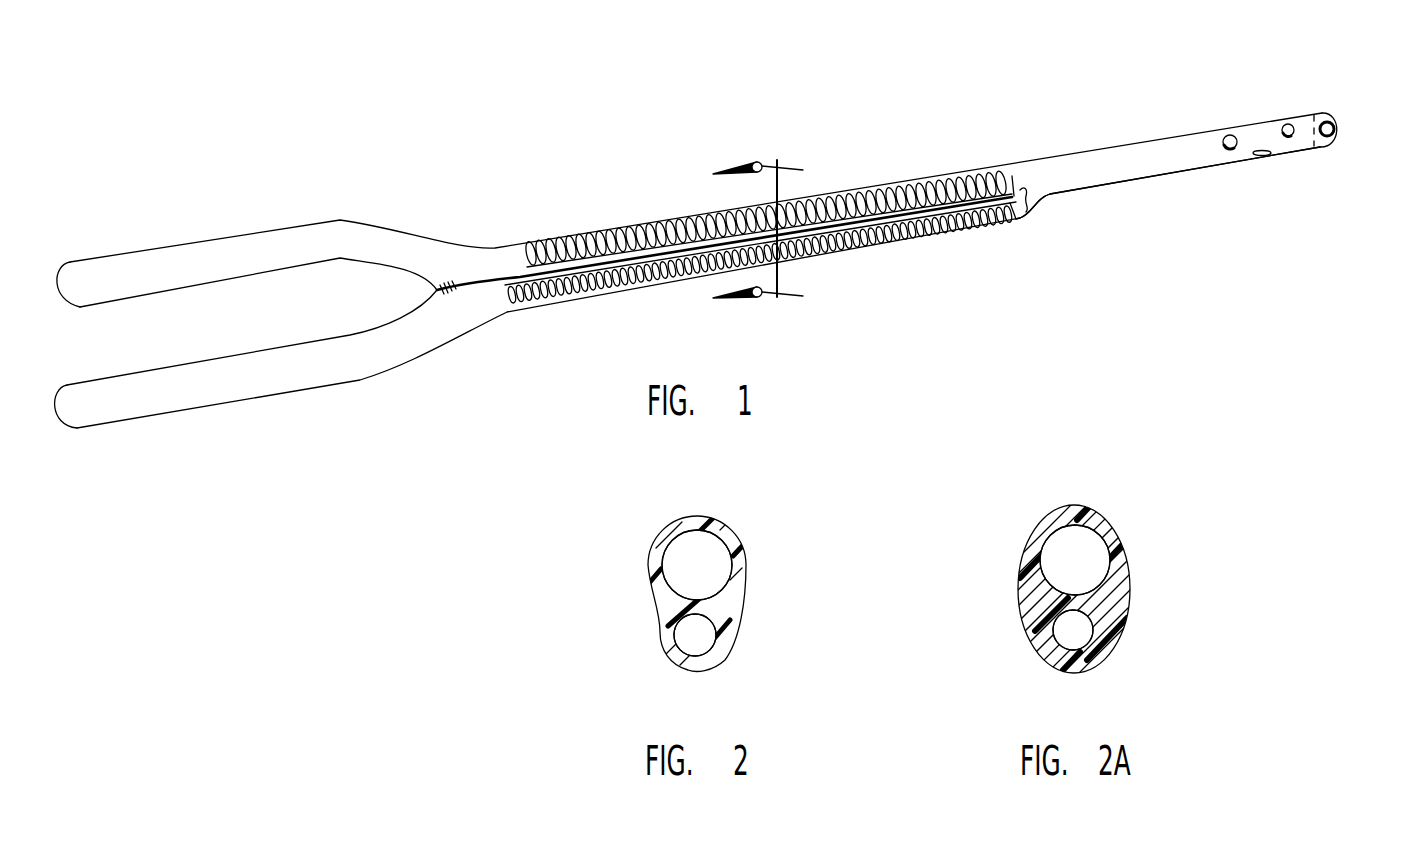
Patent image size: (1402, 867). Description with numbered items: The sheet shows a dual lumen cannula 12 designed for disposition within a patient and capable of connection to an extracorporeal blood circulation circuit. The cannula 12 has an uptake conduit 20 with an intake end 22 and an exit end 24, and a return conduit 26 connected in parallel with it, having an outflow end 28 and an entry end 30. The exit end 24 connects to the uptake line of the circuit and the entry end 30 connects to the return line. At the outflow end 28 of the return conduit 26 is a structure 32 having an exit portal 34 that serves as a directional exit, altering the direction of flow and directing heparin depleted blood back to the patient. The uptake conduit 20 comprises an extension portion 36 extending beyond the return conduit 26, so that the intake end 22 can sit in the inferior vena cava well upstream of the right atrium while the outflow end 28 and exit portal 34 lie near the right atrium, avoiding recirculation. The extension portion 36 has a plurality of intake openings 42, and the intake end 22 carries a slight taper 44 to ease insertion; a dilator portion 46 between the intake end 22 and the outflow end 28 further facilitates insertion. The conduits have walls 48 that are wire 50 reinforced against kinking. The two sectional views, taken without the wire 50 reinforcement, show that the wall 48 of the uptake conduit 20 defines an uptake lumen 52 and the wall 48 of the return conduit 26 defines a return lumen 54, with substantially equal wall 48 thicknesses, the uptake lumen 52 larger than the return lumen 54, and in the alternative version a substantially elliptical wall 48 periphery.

In FIG. 1, the cannula 12 is at (557, 213).
In FIG. 2, the cannula 12 is at (772, 597).
In FIG. 2A, the cannula 12 is at (1162, 572).
In FIG. 1, the uptake conduit 20 is at (208, 262).
In FIG. 2, the uptake conduit 20 is at (720, 533).
In FIG. 2A, the uptake conduit 20 is at (1100, 520).
In FIG. 1, the intake end 22 is at (1335, 125).
In FIG. 1, the exit end 24 is at (62, 286).
In FIG. 1, the return conduit 26 is at (283, 372).
In FIG. 2, the return conduit 26 is at (680, 657).
In FIG. 2A, the return conduit 26 is at (1033, 645).
In FIG. 1, the outflow end 28 is at (987, 225).
In FIG. 1, the entry end 30 is at (62, 408).
In FIG. 1, the structure 32 is at (1024, 197).
In FIG. 1, the exit portal 34 is at (1014, 220).
In FIG. 1, the extension portion 36 is at (1145, 168).
In FIG. 1, the intake openings 42 is at (1230, 135).
In FIG. 1, the taper 44 is at (1331, 143).
In FIG. 1, the dilator portion 46 is at (1036, 201).
In FIG. 2, the wall 48 is at (690, 525).
In FIG. 2A, the wall 48 is at (1050, 515).
In FIG. 1, the wire 50 is at (640, 255).
In FIG. 2, the uptake lumen 52 is at (700, 558).
In FIG. 2A, the uptake lumen 52 is at (1083, 553).
In FIG. 2, the return lumen 54 is at (695, 632).
In FIG. 2A, the return lumen 54 is at (1073, 625).